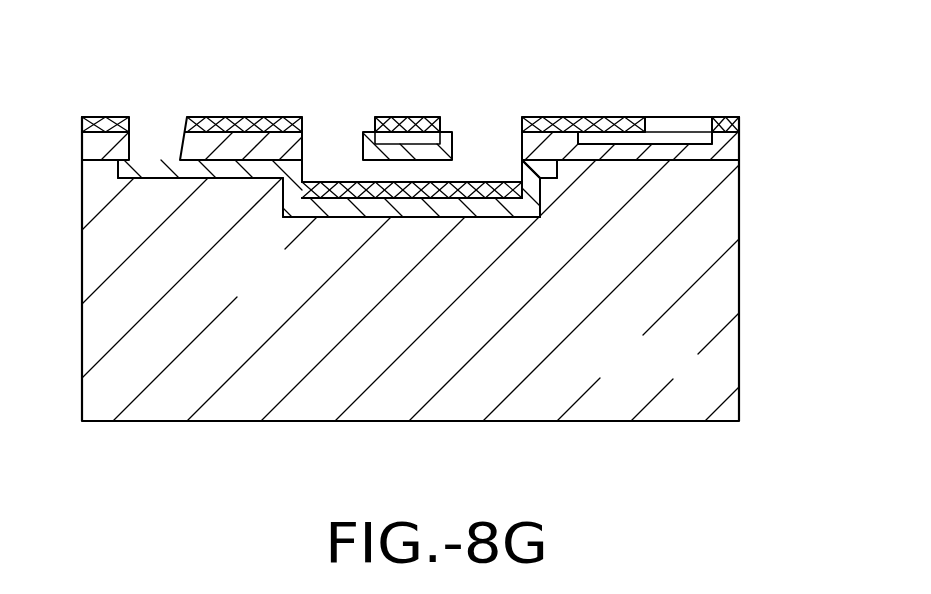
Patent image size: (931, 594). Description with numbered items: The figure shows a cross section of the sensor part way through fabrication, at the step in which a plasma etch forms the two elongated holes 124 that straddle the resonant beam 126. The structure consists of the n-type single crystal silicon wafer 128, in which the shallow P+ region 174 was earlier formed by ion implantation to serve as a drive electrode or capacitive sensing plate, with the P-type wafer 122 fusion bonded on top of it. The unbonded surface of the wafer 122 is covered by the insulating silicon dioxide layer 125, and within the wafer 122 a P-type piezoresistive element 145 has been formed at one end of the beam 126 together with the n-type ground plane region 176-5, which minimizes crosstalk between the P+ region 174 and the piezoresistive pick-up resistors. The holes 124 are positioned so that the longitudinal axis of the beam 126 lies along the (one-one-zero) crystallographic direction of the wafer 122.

The P-type wafer 122 is at (750, 108).
The elongated holes 124 is at (330, 135).
The insulating silicon dioxide layer 125 is at (400, 116).
The resonant beam 126 is at (452, 133).
The silicon wafer 128 is at (278, 290).
The piezoresistive element 145 is at (412, 138).
The P+ region 174 is at (160, 156).
The n-type ground plane region 176-5 is at (667, 131).